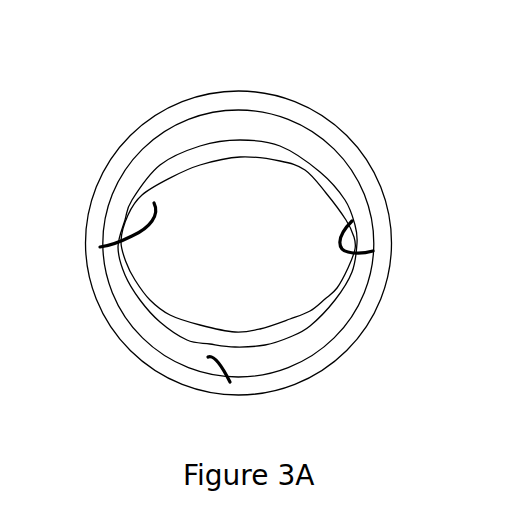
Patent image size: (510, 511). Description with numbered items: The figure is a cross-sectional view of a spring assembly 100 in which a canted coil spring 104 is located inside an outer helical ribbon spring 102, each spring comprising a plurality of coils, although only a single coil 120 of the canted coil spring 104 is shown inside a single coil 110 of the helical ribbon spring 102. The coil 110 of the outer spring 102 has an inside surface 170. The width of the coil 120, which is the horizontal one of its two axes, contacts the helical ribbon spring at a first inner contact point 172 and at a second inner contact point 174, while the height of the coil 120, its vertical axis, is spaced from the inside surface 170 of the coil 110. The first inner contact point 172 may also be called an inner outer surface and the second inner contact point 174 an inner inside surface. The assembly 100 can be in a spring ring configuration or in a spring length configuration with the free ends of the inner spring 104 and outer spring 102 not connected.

The spring assembly 100 is at (363, 96).
The outer helical ribbon spring 102 is at (161, 117).
The coil of the helical ribbon spring 110 is at (245, 100).
The canted coil spring 104 is at (327, 164).
The coil of the canted coil spring 120 is at (330, 305).
The inside surface 170 is at (208, 357).
The first inner contact point 172 is at (154, 203).
The second inner contact point 174 is at (352, 221).